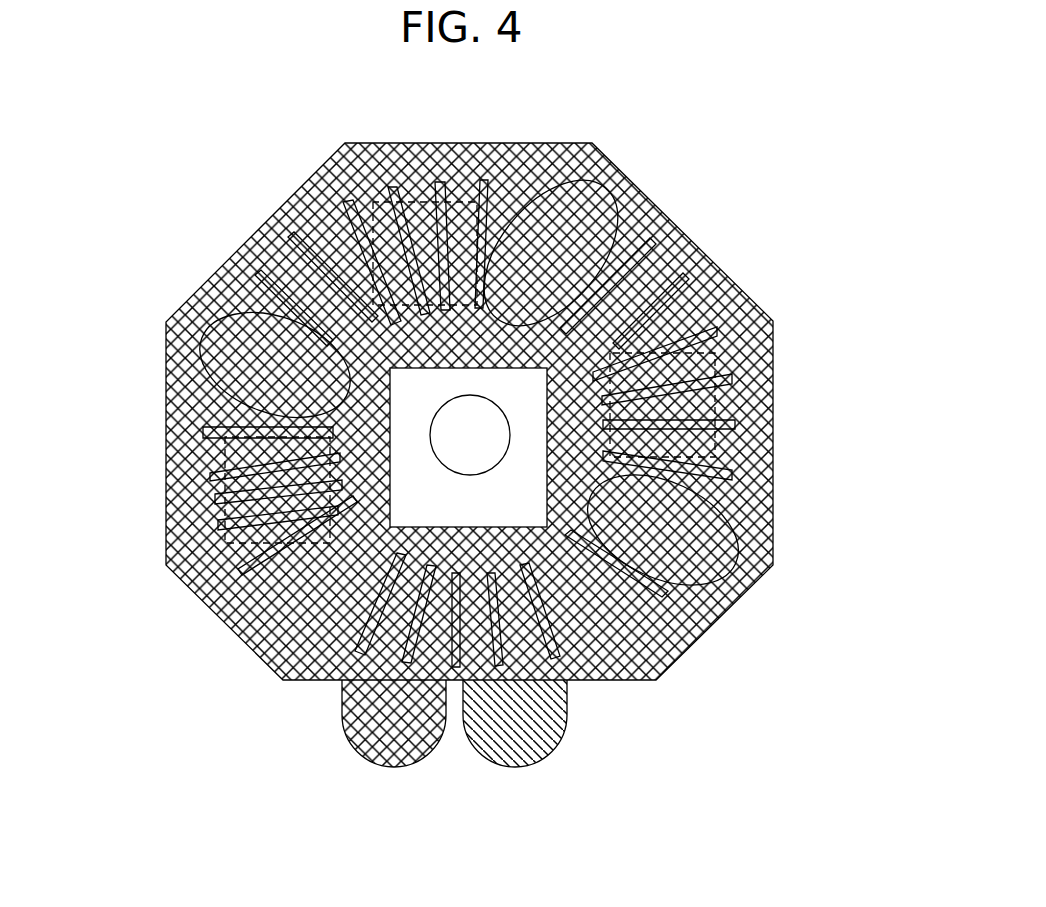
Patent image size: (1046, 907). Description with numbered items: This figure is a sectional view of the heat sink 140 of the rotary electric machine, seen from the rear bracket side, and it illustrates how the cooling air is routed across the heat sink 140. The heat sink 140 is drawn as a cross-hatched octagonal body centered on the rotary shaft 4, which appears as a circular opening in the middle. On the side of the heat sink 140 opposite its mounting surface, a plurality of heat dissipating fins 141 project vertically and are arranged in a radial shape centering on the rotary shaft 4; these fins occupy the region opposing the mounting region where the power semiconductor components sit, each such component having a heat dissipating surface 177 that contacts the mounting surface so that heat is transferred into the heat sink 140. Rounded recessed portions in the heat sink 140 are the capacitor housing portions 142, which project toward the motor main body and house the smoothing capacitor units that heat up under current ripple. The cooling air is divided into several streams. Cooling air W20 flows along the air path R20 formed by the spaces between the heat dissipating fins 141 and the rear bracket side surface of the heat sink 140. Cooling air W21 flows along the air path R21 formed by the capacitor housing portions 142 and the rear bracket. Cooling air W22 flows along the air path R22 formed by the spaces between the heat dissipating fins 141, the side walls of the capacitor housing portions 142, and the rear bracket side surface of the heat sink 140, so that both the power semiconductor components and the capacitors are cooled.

The heat sink 140 is at (737, 303).
The heat dissipating fins 141 is at (487, 183).
The capacitor housing portions 142 is at (578, 198).
The heat dissipating surface 177 is at (412, 200).
The rotary shaft 4 is at (495, 460).
The air path R21 is at (243, 330).
The cooling air W21 is at (232, 338).
The air path R22 is at (210, 385).
The cooling air W22 is at (275, 417).
The air path R20 is at (225, 487).
The cooling air W20 is at (225, 510).